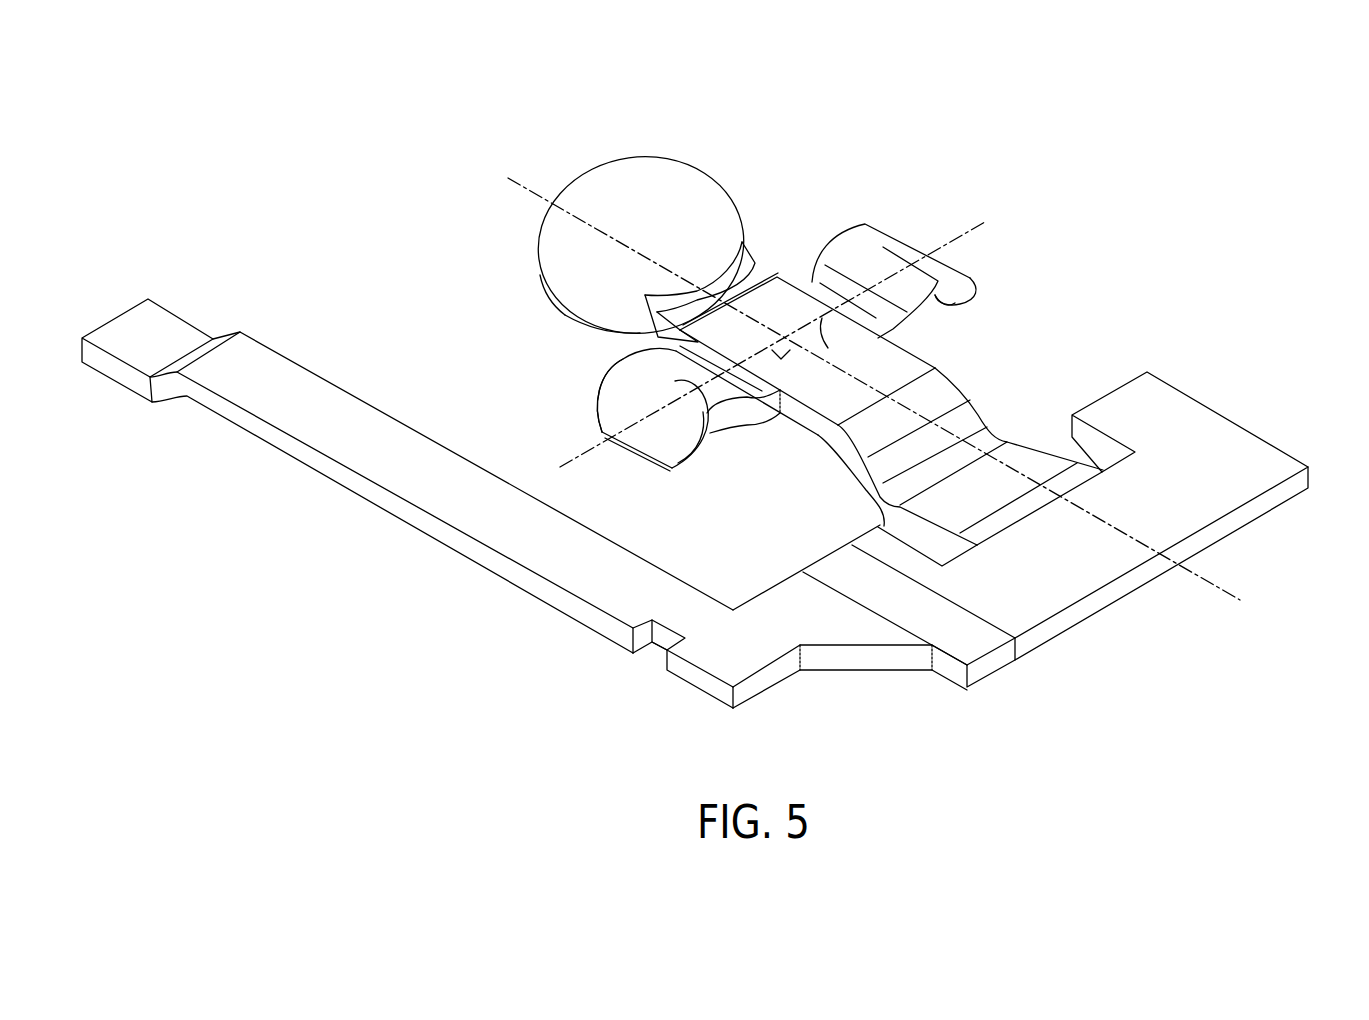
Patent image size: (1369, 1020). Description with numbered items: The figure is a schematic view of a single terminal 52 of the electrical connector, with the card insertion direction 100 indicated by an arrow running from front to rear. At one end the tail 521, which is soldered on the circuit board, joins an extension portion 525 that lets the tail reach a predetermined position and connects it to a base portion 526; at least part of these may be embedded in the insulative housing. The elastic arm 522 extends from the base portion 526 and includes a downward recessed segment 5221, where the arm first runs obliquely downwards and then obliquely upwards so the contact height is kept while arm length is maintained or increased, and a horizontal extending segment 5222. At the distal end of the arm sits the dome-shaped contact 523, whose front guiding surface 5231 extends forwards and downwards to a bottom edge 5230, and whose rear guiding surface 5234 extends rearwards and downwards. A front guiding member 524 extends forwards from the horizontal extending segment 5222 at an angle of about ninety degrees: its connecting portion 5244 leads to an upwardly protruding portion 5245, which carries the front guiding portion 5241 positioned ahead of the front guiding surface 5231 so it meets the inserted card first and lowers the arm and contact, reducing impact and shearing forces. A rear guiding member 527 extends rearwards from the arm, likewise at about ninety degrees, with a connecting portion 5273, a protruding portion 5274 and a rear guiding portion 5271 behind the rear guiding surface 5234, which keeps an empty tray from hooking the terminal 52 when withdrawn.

The terminal 52 is at (338, 97).
The card insertion direction 100 is at (560, 52).
The tail 521 is at (135, 325).
The elastic arm 522 is at (815, 308).
The downward recessed segment 5221 is at (972, 438).
The horizontal extending segment 5222 is at (792, 300).
The contact 523 is at (650, 160).
The bottom edge 5230 is at (570, 316).
The front guiding surface 5231 is at (553, 270).
The rear guiding surface 5234 is at (700, 175).
The front guiding member 524 is at (600, 425).
The front guiding portion 5241 is at (642, 408).
The connecting portion 5244 is at (763, 418).
The protruding portion 5245 is at (707, 412).
The extension portion 525 is at (310, 430).
The base portion 526 is at (1170, 495).
The rear guiding member 527 is at (977, 270).
The rear guiding portion 5271 is at (892, 232).
The connecting portion 5273 is at (905, 340).
The protruding portion 5274 is at (958, 300).